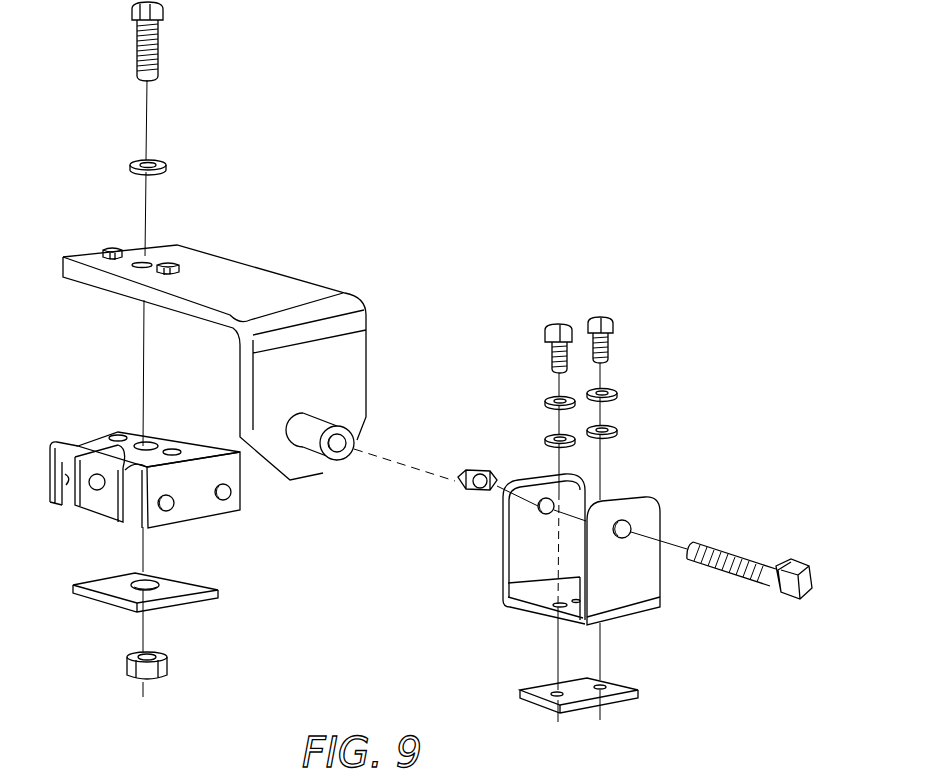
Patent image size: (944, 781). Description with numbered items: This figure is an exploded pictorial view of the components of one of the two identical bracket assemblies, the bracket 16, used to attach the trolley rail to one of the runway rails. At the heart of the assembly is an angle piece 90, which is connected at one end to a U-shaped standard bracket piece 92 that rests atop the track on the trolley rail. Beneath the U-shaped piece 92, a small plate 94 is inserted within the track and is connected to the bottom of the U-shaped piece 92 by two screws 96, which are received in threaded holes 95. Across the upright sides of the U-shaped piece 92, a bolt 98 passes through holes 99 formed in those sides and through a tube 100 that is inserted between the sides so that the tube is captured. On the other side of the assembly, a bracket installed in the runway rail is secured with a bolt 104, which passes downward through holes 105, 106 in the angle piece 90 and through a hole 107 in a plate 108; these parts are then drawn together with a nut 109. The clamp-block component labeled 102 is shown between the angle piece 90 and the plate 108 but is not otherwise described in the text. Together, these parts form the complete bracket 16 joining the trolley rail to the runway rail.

The bracket 16 is at (440, 250).
The angle piece 90 is at (255, 287).
The U-shaped standard bracket piece 92 is at (627, 615).
The small plate 94 is at (617, 703).
The threaded holes 95 is at (556, 693).
The screws 96 is at (552, 362).
The bolt 98 is at (713, 545).
The holes 99 is at (547, 513).
The tube 100 is at (320, 422).
The clamp block 102 is at (256, 514).
The bolt 104 is at (158, 55).
The hole 105 is at (145, 258).
The hole 106 is at (150, 443).
The hole 107 is at (152, 582).
The plate 108 is at (188, 607).
The nut 109 is at (167, 673).